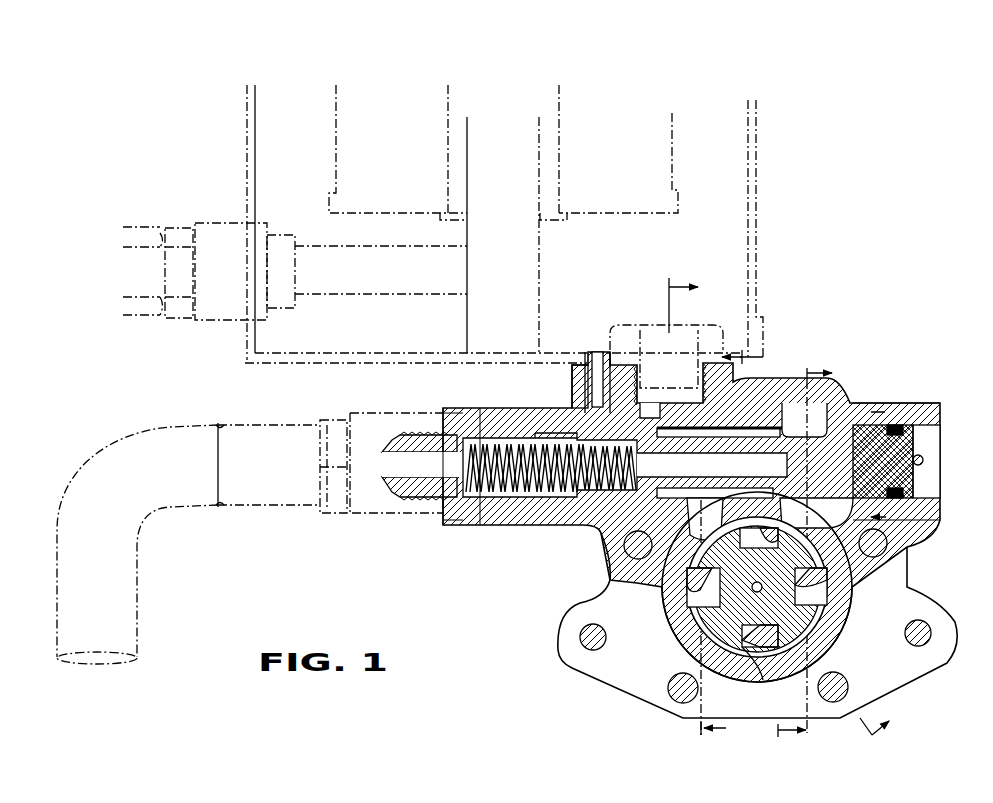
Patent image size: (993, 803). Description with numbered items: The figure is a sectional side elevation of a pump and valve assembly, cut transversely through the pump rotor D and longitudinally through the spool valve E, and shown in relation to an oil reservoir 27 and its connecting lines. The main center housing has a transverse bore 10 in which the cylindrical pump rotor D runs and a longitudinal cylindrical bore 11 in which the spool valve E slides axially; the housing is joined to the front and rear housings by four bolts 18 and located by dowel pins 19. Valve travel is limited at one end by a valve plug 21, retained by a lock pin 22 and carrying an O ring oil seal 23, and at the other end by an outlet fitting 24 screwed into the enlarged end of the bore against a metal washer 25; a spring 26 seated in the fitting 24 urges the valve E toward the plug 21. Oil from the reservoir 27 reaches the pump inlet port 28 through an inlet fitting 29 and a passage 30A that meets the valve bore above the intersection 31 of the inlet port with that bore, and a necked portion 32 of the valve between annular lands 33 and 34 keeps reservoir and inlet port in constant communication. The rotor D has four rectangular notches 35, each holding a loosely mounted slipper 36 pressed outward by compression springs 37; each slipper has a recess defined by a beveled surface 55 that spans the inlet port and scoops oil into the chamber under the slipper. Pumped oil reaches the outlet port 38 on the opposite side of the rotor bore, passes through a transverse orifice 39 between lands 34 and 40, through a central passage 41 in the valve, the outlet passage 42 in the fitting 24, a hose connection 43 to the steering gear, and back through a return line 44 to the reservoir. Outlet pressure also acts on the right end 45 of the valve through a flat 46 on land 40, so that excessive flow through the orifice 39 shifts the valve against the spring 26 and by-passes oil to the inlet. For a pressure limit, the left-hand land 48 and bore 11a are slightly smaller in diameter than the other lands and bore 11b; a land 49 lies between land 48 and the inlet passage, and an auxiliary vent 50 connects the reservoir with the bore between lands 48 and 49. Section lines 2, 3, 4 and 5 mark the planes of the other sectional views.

The transverse bore 10 is at (790, 633).
The longitudinal cylindrical bore 11 is at (555, 497).
The bore 11a is at (547, 437).
The bore 11b is at (647, 395).
The bolts 18 is at (613, 553).
The dowel pins 19 is at (583, 643).
The valve plug 21 is at (907, 447).
The lock pin 22 is at (923, 460).
The O ring oil seal 23 is at (925, 403).
The outlet fitting 24 is at (470, 513).
The metal washer 25 is at (508, 527).
The spring 26 is at (465, 512).
The oil reservoir 27 is at (753, 213).
The pump inlet port 28 is at (670, 573).
The inlet fitting 29 is at (666, 345).
The passage 30A is at (735, 375).
The intersection 31 is at (693, 525).
The necked portion 32 is at (724, 422).
The annular land 33 is at (631, 517).
The annular land 34 is at (752, 425).
The rectangular notches 35 is at (693, 630).
The slipper 36 is at (690, 585).
The compression springs 37 is at (702, 602).
The outlet port 38 is at (806, 528).
The transverse orifice 39 is at (789, 430).
The annular land 40 is at (853, 497).
The central passage 41 is at (757, 467).
The outlet passage 42 is at (400, 452).
The hose connection 43 is at (133, 520).
The return line 44 is at (136, 262).
The right end 45 is at (894, 425).
The flat 46 is at (860, 403).
The left-hand land 48 is at (580, 427).
The land 49 is at (660, 427).
The auxiliary vent 50 is at (603, 367).
The beveled surface 55 is at (763, 660).
The pump rotor D is at (817, 628).
The spool valve E is at (835, 397).
The section line 2 is at (783, 503).
The section line 3 is at (721, 542).
The section line 4 is at (805, 554).
The section line 5 is at (883, 464).